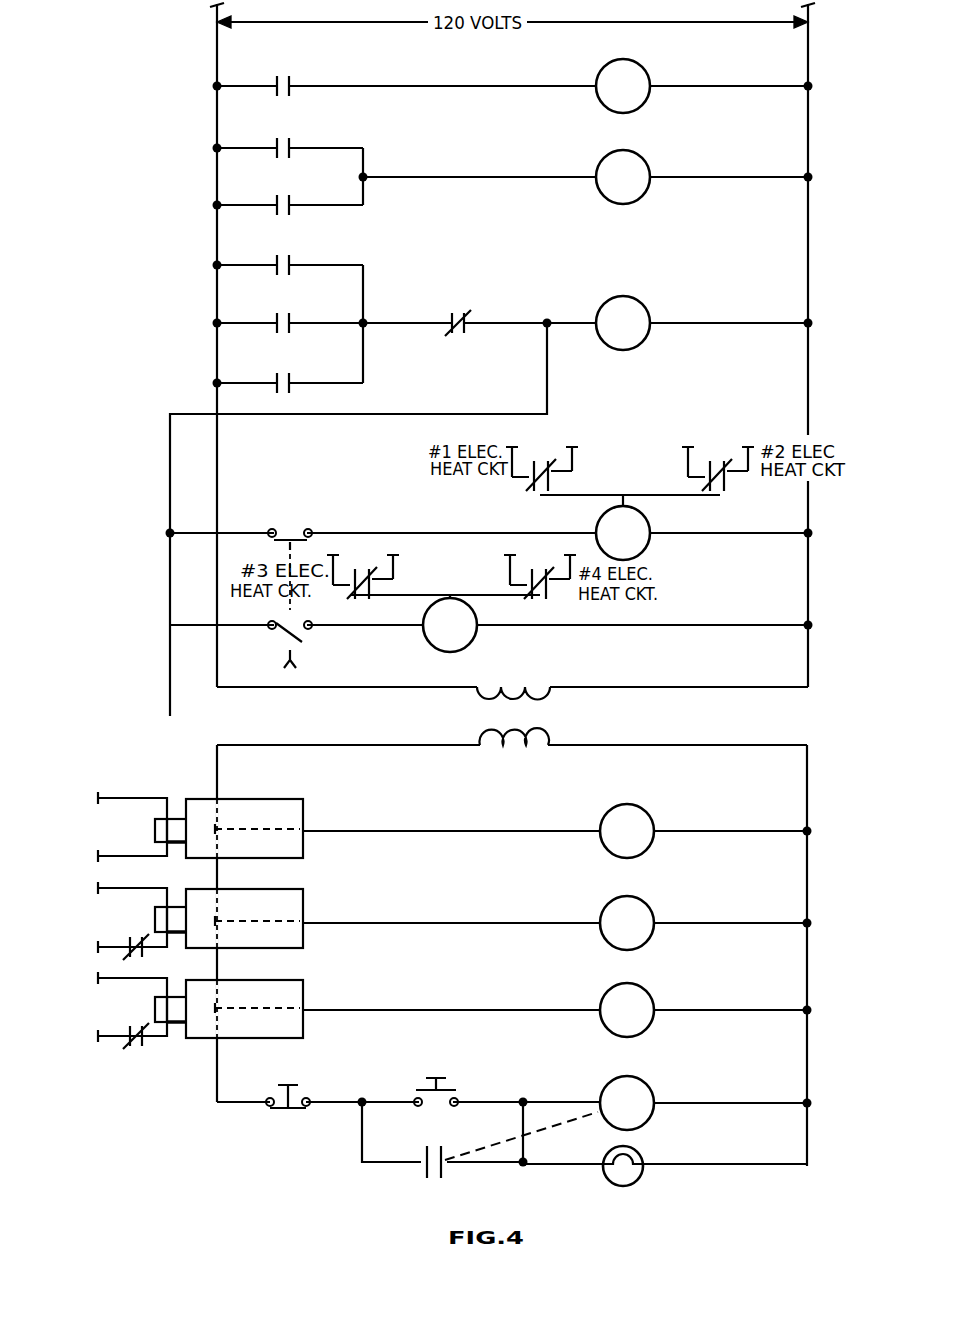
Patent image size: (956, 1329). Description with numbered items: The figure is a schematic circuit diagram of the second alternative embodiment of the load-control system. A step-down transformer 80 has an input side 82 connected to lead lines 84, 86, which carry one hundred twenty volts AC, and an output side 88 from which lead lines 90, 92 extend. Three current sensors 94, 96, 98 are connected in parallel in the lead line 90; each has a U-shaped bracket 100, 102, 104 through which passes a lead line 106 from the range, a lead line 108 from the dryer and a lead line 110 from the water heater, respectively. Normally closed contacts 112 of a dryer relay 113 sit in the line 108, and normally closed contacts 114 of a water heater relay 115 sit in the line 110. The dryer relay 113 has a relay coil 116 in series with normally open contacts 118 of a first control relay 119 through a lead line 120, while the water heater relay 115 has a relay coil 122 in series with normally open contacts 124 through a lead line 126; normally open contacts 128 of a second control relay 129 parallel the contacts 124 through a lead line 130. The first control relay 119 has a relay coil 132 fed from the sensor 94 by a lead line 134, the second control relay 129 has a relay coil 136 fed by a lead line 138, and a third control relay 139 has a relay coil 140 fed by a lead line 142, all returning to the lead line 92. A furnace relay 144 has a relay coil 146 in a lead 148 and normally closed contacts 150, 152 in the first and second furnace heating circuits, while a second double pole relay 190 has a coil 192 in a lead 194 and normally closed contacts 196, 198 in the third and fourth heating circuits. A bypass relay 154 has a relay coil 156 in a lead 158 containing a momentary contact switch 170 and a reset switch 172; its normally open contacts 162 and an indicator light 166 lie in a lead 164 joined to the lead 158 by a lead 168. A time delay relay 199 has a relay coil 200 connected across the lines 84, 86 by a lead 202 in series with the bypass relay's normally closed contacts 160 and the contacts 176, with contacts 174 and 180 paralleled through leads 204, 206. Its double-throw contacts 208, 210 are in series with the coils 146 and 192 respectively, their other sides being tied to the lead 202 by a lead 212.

The step-down transformer 80 is at (468, 764).
The input side 82 is at (515, 691).
The lead line 84 is at (217, 352).
The lead line 86 is at (808, 363).
The output side 88 is at (521, 750).
The lead line 90 is at (216, 768).
The lead line 92 is at (807, 780).
The current sensor 94 is at (302, 809).
The current sensor 96 is at (301, 897).
The current sensor 98 is at (301, 988).
The U-shaped bracket 100 is at (152, 834).
The U-shaped bracket 102 is at (147, 920).
The U-shaped bracket 104 is at (147, 1011).
The lead line 106 is at (132, 796).
The lead line 108 is at (114, 890).
The lead line 110 is at (106, 982).
The normally closed contacts 112 is at (150, 956).
The dryer relay 113 is at (638, 56).
The normally closed contacts 114 is at (144, 1039).
The water heater relay 115 is at (636, 154).
The relay coil 116 is at (731, 90).
The normally open contacts 118 is at (288, 74).
The first control relay 119 is at (643, 806).
The lead line 120 is at (446, 86).
The relay coil 122 is at (731, 180).
The normally open contacts 124 is at (298, 140).
The lead line 126 is at (462, 177).
The normally open contacts 128 is at (290, 202).
The second control relay 129 is at (643, 898).
The lead line 130 is at (345, 205).
The relay coil 132 is at (733, 833).
The lead line 134 is at (434, 829).
The relay coil 136 is at (733, 923).
The lead line 138 is at (428, 919).
The third control relay 139 is at (643, 988).
The relay coil 140 is at (733, 1011).
The lead line 142 is at (424, 1008).
The furnace relay 144 is at (637, 512).
The relay coil 146 is at (731, 538).
The lead 148 is at (424, 538).
The normally closed contacts 150 is at (566, 474).
The normally closed contacts 152 is at (688, 470).
The bypass relay 154 is at (630, 1082).
The relay coil 156 is at (733, 1105).
The lead 158 is at (512, 1098).
The normally closed contacts 160 is at (462, 338).
The normally open contacts 162 is at (424, 1174).
The lead 164 is at (570, 1164).
The indicator light 166 is at (633, 1184).
The lead 168 is at (516, 1134).
The momentary contact switch 170 is at (450, 1072).
The reset switch 172 is at (304, 1084).
The normally open contacts 174 is at (290, 260).
The normally open contacts 176 is at (289, 312).
The normally open contacts 180 is at (290, 380).
The second double pole relay 190 is at (423, 614).
The coil 192 is at (645, 626).
The lead 194 is at (354, 627).
The normally closed contacts 196 is at (395, 577).
The normally closed contacts 198 is at (508, 580).
The time delay relay 199 is at (640, 302).
The relay coil 200 is at (731, 327).
The lead 202 is at (511, 323).
The lead 204 is at (366, 292).
The lead 206 is at (363, 356).
The normally closed contacts 208 is at (298, 528).
The normally open contacts 210 is at (294, 658).
The lead 212 is at (168, 531).